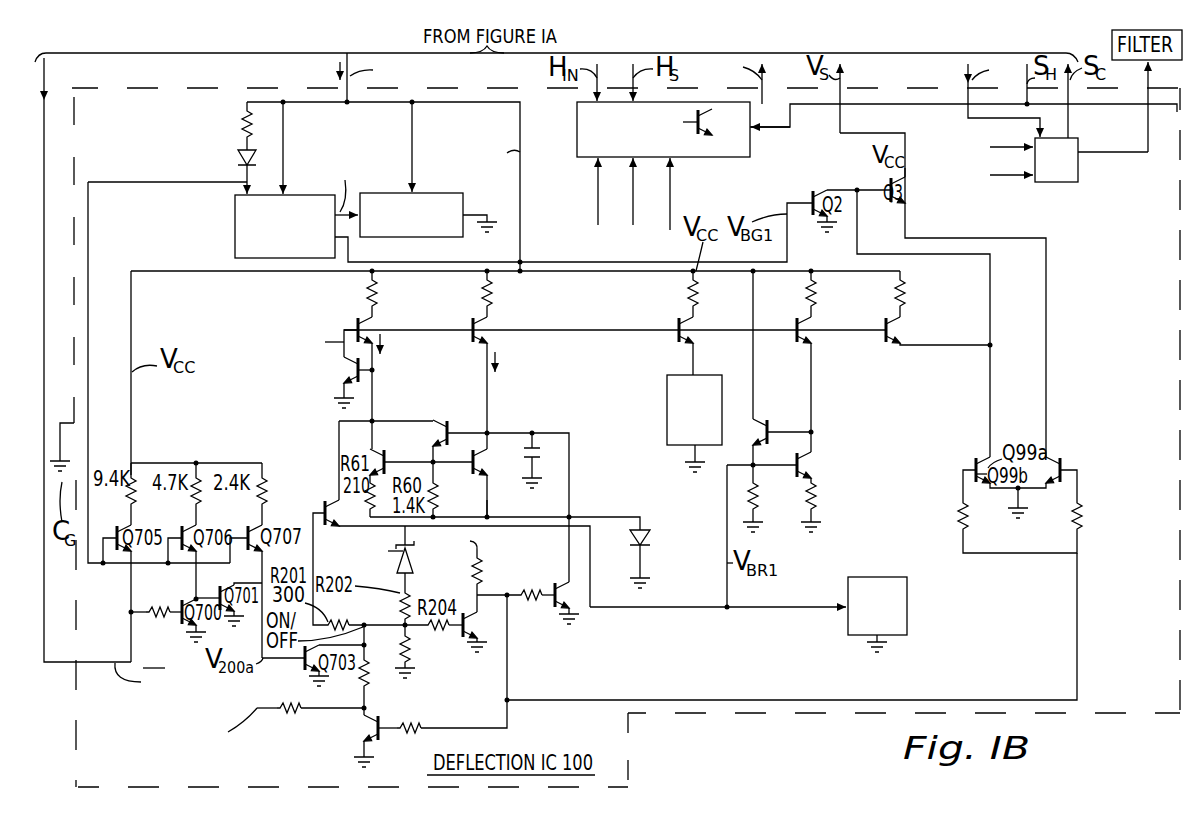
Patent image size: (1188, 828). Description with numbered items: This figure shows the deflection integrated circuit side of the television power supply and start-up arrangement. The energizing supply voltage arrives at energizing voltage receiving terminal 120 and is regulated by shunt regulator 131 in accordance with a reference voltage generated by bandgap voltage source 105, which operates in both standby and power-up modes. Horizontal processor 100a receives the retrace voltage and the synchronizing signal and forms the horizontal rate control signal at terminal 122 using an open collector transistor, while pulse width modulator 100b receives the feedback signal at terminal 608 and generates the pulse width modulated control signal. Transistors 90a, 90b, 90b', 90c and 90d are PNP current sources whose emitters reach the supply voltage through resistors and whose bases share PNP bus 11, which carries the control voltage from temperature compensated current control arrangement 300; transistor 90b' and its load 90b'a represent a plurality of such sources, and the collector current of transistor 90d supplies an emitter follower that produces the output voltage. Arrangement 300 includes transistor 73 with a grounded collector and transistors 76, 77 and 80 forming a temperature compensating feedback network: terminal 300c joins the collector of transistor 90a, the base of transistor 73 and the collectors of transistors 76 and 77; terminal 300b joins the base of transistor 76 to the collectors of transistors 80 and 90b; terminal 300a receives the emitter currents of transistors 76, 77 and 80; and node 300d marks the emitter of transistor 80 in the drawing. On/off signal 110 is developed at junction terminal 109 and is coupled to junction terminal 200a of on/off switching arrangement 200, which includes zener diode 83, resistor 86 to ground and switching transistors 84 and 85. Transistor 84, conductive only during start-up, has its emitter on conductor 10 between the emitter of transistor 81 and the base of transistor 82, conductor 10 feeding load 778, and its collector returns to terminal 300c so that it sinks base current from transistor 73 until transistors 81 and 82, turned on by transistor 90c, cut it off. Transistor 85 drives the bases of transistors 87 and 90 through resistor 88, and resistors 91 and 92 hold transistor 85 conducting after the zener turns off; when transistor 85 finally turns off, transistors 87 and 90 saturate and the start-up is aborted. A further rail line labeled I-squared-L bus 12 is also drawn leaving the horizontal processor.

The energizing voltage receiving terminal 120 is at (368, 90).
The bandgap voltage source 105 is at (302, 195).
The shunt regulator 131 is at (444, 193).
The horizontal processor 100a is at (727, 158).
The pulse width modulator 100b is at (1078, 183).
The terminal 122 is at (766, 86).
The input voltage terminal 608 is at (968, 80).
The transistor 90a is at (358, 324).
The transistor 90b is at (480, 360).
The transistor 90b' is at (662, 323).
The load 90b'a is at (657, 423).
The transistor 90c is at (797, 324).
The transistor 90d is at (886, 324).
The transistor 73 is at (355, 370).
The transistor 76 is at (450, 421).
The transistor 77 is at (386, 456).
The transistor 80 is at (482, 462).
The transistor 81 is at (767, 432).
The transistor 82 is at (811, 474).
The zener diode 83 is at (398, 565).
The switching transistor 84 is at (338, 560).
The switching transistor 85 is at (482, 618).
The resistor 86 is at (410, 656).
The transistor 87 is at (572, 601).
The resistor 88 is at (477, 570).
The transistor 90 is at (378, 731).
The resistor 91 is at (364, 682).
The resistor 92 is at (285, 712).
The junction terminal 109 is at (131, 612).
The on/off signal 110 is at (68, 664).
The temperature compensated current control arrangement 300 is at (455, 381).
The terminal 300a is at (489, 524).
The terminal 300b is at (490, 432).
The terminal 300c is at (374, 421).
The start-up circuit node 300d is at (482, 474).
The on/off switching arrangement 200 is at (550, 647).
The junction terminal 200a is at (403, 605).
The load 778 is at (880, 577).
The conductor 10 is at (807, 607).
The PNP bus 11 is at (556, 372).
The I2L bus 12 is at (585, 517).